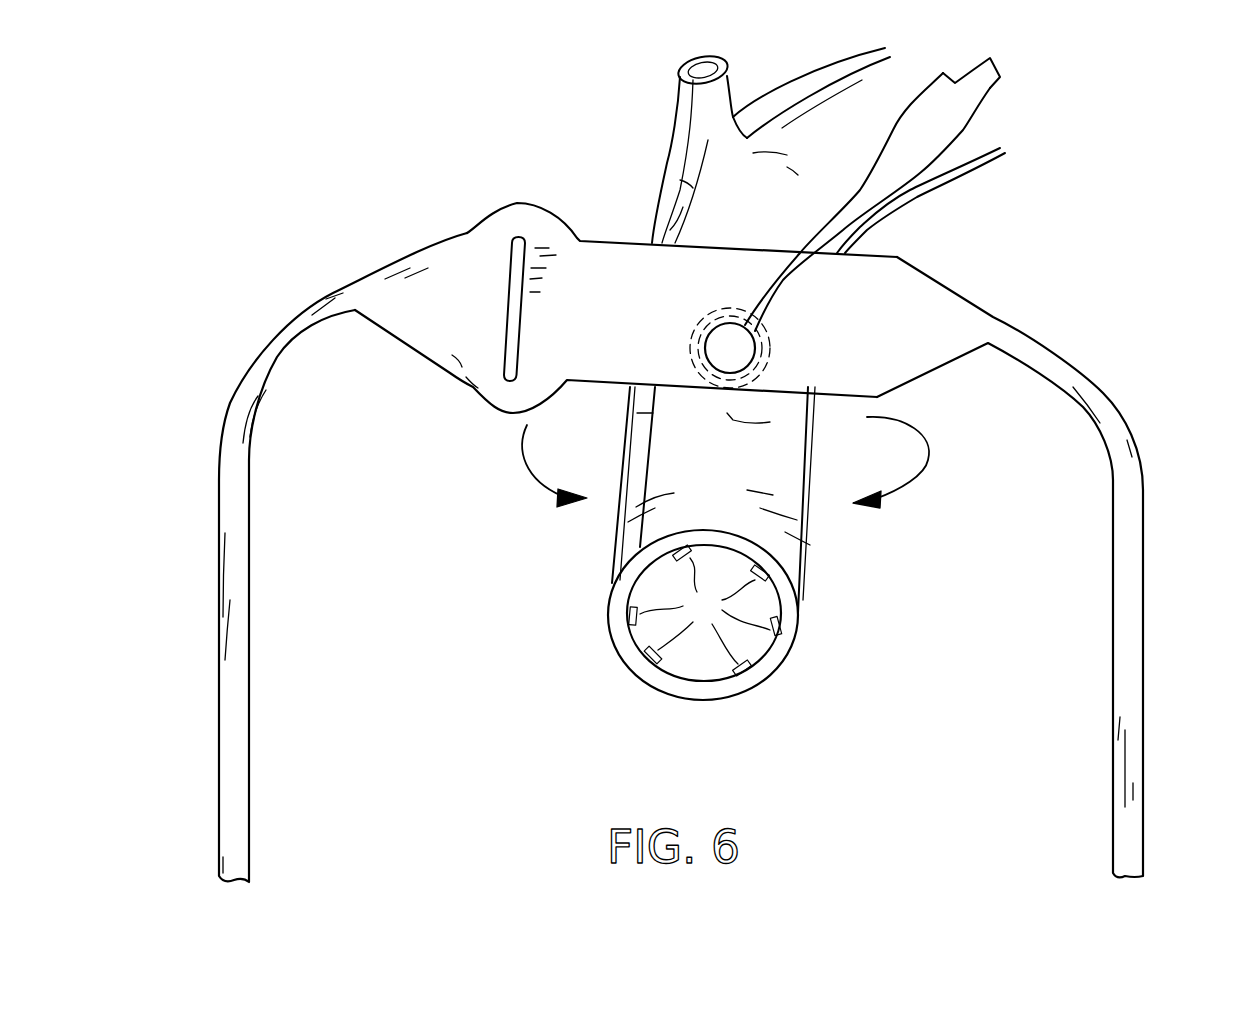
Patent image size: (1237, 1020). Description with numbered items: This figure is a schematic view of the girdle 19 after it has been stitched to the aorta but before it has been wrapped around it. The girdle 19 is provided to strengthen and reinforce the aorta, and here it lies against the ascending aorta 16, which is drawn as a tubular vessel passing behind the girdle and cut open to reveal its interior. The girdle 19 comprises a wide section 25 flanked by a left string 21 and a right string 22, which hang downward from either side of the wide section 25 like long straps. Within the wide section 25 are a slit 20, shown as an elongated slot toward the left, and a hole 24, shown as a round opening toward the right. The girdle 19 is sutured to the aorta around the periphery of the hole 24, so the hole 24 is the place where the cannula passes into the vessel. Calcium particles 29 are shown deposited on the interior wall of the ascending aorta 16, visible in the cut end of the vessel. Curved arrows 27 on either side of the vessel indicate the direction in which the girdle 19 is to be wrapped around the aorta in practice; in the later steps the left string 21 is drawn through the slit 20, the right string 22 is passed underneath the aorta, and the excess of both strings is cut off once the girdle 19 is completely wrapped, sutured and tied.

The ascending aorta 16 is at (806, 374).
The girdle 19 is at (673, 512).
The slit 20 is at (518, 237).
The left string 21 is at (1145, 702).
The right string 22 is at (220, 698).
The hole 24 is at (710, 342).
The wide section 25 is at (612, 256).
The arrows 27 is at (523, 473).
The calcium particles 29 is at (705, 610).